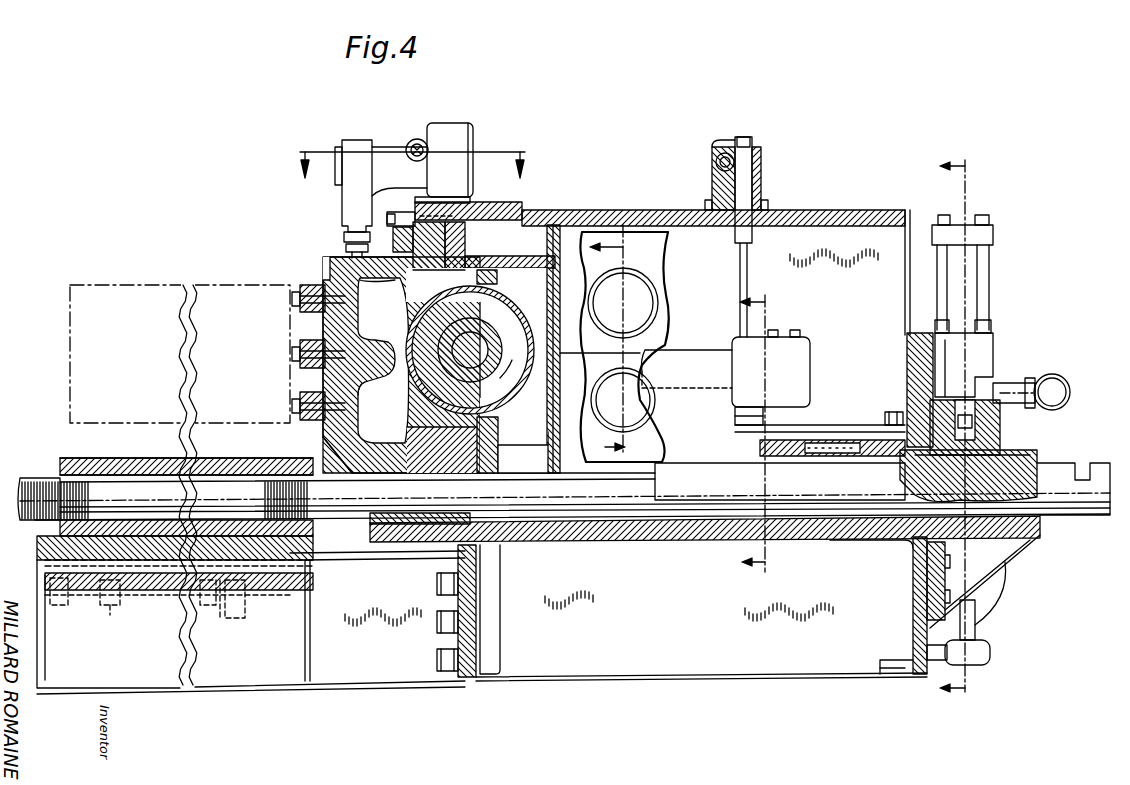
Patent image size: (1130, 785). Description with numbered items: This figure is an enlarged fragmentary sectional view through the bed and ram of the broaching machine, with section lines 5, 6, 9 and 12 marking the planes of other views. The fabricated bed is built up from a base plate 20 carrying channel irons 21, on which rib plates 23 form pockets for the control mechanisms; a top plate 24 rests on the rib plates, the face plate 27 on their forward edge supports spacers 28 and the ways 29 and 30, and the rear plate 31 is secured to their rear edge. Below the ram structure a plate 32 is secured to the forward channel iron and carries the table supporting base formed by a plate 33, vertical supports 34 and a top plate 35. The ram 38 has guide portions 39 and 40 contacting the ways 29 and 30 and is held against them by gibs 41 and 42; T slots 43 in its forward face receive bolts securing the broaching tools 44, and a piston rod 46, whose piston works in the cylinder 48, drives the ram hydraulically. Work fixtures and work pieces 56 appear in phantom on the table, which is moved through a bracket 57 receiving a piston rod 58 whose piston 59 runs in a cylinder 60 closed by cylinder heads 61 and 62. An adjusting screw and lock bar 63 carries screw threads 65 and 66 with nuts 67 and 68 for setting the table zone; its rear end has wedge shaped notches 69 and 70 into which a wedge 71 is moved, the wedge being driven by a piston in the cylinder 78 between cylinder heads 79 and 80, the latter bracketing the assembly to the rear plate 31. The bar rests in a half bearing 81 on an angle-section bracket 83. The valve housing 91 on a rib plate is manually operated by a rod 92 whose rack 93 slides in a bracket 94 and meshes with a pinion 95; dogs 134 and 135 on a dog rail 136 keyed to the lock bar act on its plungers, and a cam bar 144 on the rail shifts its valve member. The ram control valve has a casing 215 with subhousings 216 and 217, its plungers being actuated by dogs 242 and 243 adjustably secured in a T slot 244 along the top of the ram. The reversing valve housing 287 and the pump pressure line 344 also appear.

The section line 5- 5 is at (963, 430).
The section line 6- 6 is at (761, 434).
The section line 9- 9 is at (411, 175).
The section line 12- 12 is at (624, 342).
The base plate 20 is at (862, 676).
The channel irons 21 is at (913, 637).
The rib plates 23 is at (895, 238).
The top plate 24 is at (835, 208).
The face plate 27 is at (550, 322).
The spacers 28 is at (505, 276).
The way or guide 29 is at (470, 251).
The way or guide 30 is at (520, 459).
The rear plate 31 is at (907, 348).
The plate 32 is at (468, 678).
The plate 33 is at (408, 688).
The vertical supports 34 is at (45, 657).
The top plate 35 is at (405, 566).
The ram 38 is at (340, 265).
The guide portion 39 is at (420, 316).
The guide portion 40 is at (430, 453).
The gib 41 is at (413, 210).
The gib 42 is at (398, 438).
The T slots 43 is at (330, 290).
The broaching tools 44 is at (292, 322).
The piston rod 46 is at (482, 362).
The cylinder 48 is at (506, 395).
The work fixtures and work pieces 56 is at (70, 378).
The bracket 57 is at (55, 606).
The piston rod 58 is at (140, 612).
The piston 59 is at (206, 608).
The cylinder 60 is at (221, 620).
The cylinder head 61 is at (246, 624).
The cylinder head 62 is at (112, 620).
The adjusting screw and lock bar 63 is at (1052, 520).
The screw threads 65 is at (60, 462).
The screw threads 66 is at (304, 466).
The nut 67 is at (36, 480).
The nut 68 is at (352, 535).
The wedge shaped notch 69 is at (1075, 478).
The wedge shaped notch 70 is at (990, 470).
The wedge 71 is at (1000, 455).
The cylinder 78 is at (972, 285).
The cylinder head 79 is at (993, 237).
The cylinder head 80 is at (985, 355).
The half bearing 81 is at (1020, 540).
The bracket 83 is at (935, 578).
The valve housing 91 is at (808, 369).
The rod 92 is at (740, 259).
The short rack 93 is at (752, 162).
The bracket 94 is at (762, 177).
The pinion 95 is at (716, 165).
The dog 134 is at (736, 427).
The dog 135 is at (893, 412).
The dog rail 136 is at (737, 440).
The dog or cam bar 144 is at (864, 420).
The valve casing or housing 215 is at (415, 140).
The subhousing 216 is at (455, 123).
The subhousing 217 is at (355, 129).
The nut 242 is at (345, 236).
The dog 243 is at (346, 249).
The T slot 244 is at (366, 290).
The casing or housing 287 is at (648, 280).
The pressure line 344 is at (1052, 381).